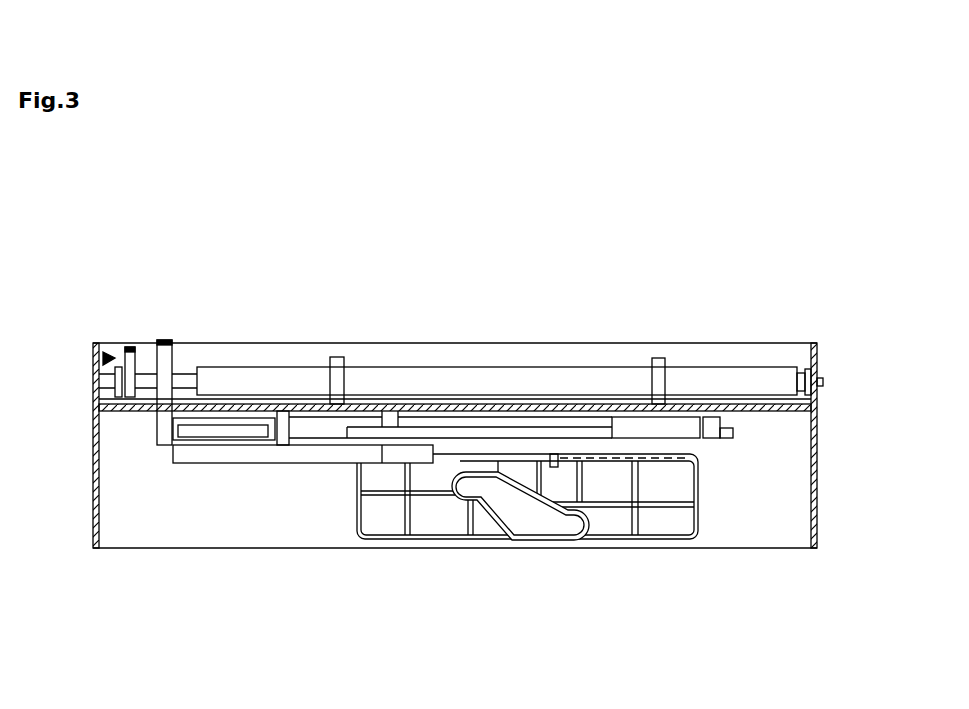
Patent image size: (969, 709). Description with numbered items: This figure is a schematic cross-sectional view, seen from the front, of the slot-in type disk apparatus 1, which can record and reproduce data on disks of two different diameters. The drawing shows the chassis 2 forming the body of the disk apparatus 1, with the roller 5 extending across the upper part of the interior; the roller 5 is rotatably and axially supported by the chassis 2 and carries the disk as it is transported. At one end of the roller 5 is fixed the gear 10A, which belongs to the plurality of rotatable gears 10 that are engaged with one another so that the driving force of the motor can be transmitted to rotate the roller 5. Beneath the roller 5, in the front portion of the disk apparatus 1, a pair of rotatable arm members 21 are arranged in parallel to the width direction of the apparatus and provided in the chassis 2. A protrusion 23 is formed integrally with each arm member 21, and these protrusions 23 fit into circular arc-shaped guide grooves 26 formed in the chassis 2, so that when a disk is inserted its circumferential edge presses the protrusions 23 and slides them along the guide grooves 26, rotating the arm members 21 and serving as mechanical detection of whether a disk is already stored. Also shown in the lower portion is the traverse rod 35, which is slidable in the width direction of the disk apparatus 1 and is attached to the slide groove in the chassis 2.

The disk apparatus 1 is at (799, 293).
The chassis 2 is at (777, 470).
The roller 5 is at (713, 378).
The gears 10 is at (98, 347).
The gear 10A is at (162, 358).
The arm member 21 is at (338, 427).
The protrusion 23 is at (334, 358).
The guide groove 26 is at (335, 410).
The traverse rod 35 is at (607, 482).